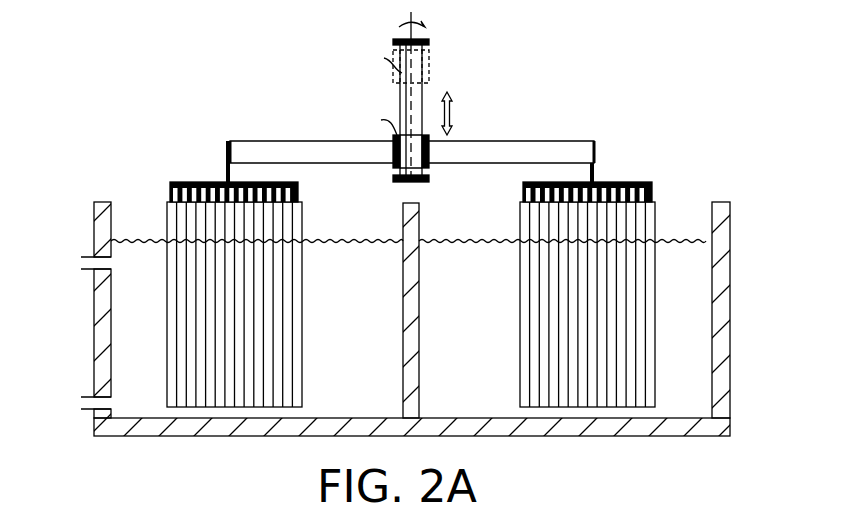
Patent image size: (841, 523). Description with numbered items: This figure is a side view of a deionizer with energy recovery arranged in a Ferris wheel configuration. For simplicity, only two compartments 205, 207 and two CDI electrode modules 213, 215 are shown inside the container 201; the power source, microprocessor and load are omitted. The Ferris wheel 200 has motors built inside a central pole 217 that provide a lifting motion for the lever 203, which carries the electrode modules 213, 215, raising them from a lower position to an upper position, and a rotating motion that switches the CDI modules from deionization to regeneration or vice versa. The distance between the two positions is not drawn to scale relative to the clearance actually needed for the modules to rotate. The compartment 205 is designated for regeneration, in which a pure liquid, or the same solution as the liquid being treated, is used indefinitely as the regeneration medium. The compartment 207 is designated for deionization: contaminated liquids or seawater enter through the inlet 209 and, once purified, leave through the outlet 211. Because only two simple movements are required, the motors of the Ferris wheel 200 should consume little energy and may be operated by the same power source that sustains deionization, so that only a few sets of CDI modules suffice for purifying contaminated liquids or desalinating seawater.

The Ferris wheel 200 is at (718, 83).
The container 201 is at (720, 285).
The lever 203 is at (310, 150).
The compartment 205 is at (690, 362).
The compartment 207 is at (148, 257).
The inlet 209 is at (88, 264).
The outlet 211 is at (88, 404).
The CDI electrode module 213 is at (187, 183).
The CDI electrode module 215 is at (632, 183).
The rotary shaft 217 is at (417, 93).